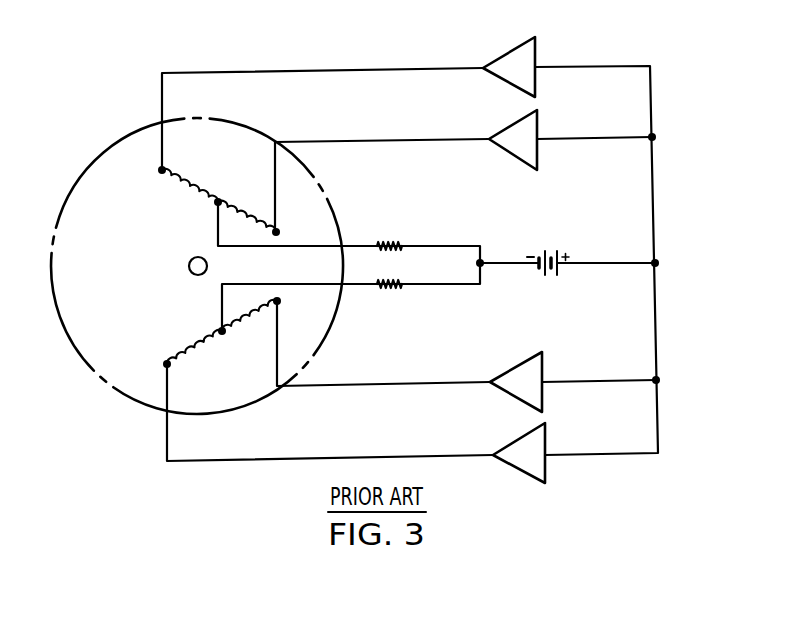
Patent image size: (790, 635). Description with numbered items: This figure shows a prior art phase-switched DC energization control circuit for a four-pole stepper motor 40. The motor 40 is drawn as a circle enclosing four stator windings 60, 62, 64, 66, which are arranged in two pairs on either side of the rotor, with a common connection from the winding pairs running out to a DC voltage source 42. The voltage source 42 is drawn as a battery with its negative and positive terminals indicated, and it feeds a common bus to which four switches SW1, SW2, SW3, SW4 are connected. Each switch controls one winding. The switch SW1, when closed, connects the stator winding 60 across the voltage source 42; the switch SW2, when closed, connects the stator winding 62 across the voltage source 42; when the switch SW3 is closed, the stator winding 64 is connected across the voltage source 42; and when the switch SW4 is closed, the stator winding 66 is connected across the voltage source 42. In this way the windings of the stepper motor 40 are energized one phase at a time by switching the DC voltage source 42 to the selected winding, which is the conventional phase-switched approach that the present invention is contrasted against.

The four-pole stepper motor 40 is at (91, 168).
The voltage source 42 is at (548, 251).
The stator winding 60 is at (190, 189).
The stator winding 62 is at (253, 220).
The stator winding 64 is at (256, 315).
The stator winding 66 is at (195, 343).
The switch SW1 is at (515, 50).
The switch SW2 is at (515, 123).
The switch SW3 is at (518, 367).
The switch SW4 is at (520, 442).